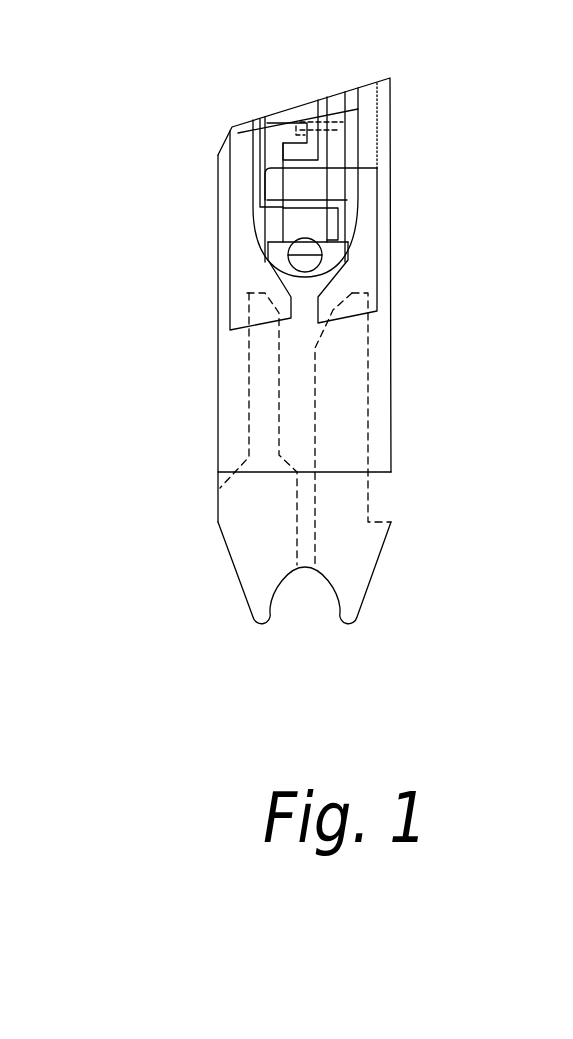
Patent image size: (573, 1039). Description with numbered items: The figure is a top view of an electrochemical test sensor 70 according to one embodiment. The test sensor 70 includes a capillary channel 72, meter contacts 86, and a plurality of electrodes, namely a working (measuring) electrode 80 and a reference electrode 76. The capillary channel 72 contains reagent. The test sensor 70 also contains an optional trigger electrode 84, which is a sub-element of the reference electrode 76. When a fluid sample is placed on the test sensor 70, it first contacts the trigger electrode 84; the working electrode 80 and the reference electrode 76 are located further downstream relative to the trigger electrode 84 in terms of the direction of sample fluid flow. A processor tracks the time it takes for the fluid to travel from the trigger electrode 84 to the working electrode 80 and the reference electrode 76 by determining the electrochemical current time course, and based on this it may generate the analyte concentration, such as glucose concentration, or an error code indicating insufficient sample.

The test sensor 70 is at (122, 167).
The capillary channel 72 is at (335, 104).
The trigger electrode 84 is at (343, 123).
The working electrode 80 is at (308, 182).
The reference electrode 76 is at (312, 220).
The meter contacts 86 is at (240, 555).